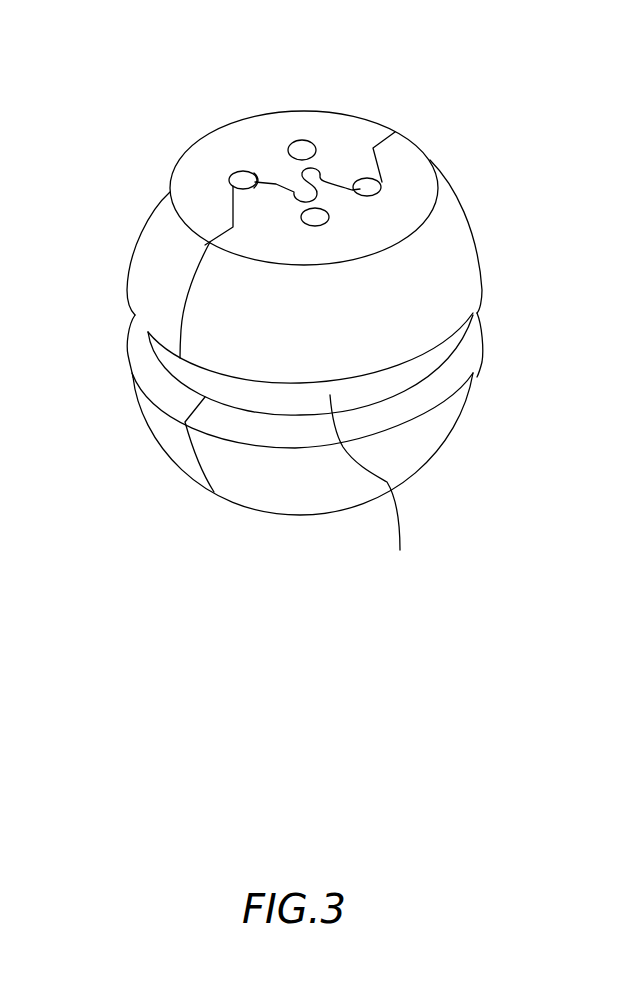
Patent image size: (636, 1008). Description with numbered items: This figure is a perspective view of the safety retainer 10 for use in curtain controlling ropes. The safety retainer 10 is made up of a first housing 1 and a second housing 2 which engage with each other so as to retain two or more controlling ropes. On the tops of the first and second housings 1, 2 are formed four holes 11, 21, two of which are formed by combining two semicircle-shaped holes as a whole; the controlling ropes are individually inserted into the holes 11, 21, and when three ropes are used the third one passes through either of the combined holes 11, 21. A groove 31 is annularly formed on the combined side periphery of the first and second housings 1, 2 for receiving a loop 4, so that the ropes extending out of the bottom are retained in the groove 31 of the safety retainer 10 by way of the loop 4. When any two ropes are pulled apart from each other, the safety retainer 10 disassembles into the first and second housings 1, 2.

The safety retainer 10 is at (120, 422).
The first housing 1 is at (165, 203).
The second housing 2 is at (468, 268).
The hole 11 is at (240, 174).
The hole 21 is at (380, 184).
The groove 31 is at (247, 420).
The loop 4 is at (367, 493).